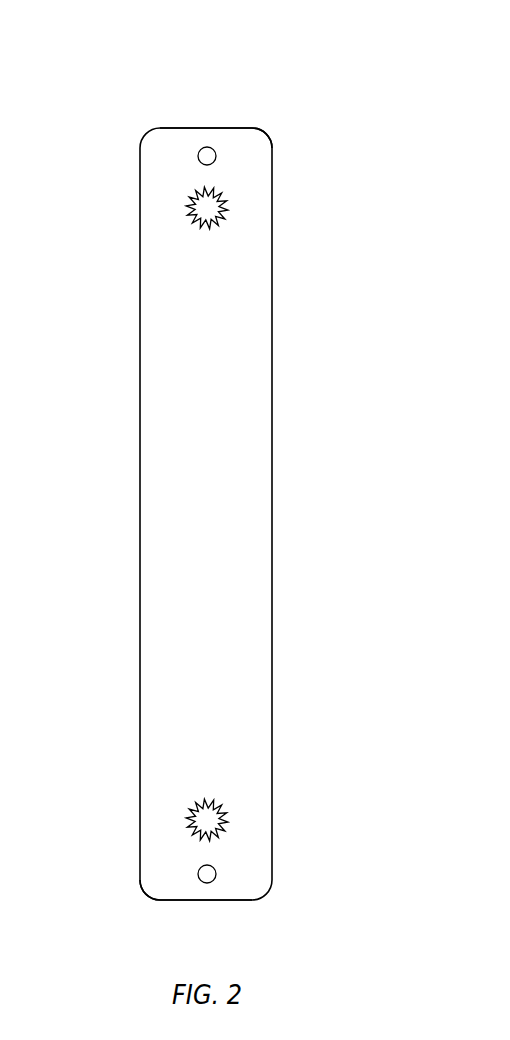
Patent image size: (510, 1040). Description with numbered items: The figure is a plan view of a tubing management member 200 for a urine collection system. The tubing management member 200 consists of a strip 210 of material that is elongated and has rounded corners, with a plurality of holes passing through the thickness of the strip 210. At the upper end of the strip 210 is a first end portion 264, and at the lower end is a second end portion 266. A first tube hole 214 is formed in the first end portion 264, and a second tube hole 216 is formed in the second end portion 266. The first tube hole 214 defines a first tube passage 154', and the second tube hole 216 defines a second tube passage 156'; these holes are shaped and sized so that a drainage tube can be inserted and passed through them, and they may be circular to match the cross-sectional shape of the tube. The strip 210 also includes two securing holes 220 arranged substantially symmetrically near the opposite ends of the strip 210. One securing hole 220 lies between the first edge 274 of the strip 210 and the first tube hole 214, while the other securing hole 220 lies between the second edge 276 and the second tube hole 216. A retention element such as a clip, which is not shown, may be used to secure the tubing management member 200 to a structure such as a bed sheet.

The tubing management member 200 is at (153, 93).
The strip 210 is at (140, 328).
The first tube hole 214 is at (190, 212).
The second tube hole 216 is at (186, 820).
The securing hole 220 is at (215, 152).
The first end portion 264 is at (268, 134).
The second end portion 266 is at (158, 880).
The first edge 274 is at (197, 128).
The second edge 276 is at (185, 900).
The first tube passage 154' is at (298, 202).
The second tube passage 156' is at (303, 796).